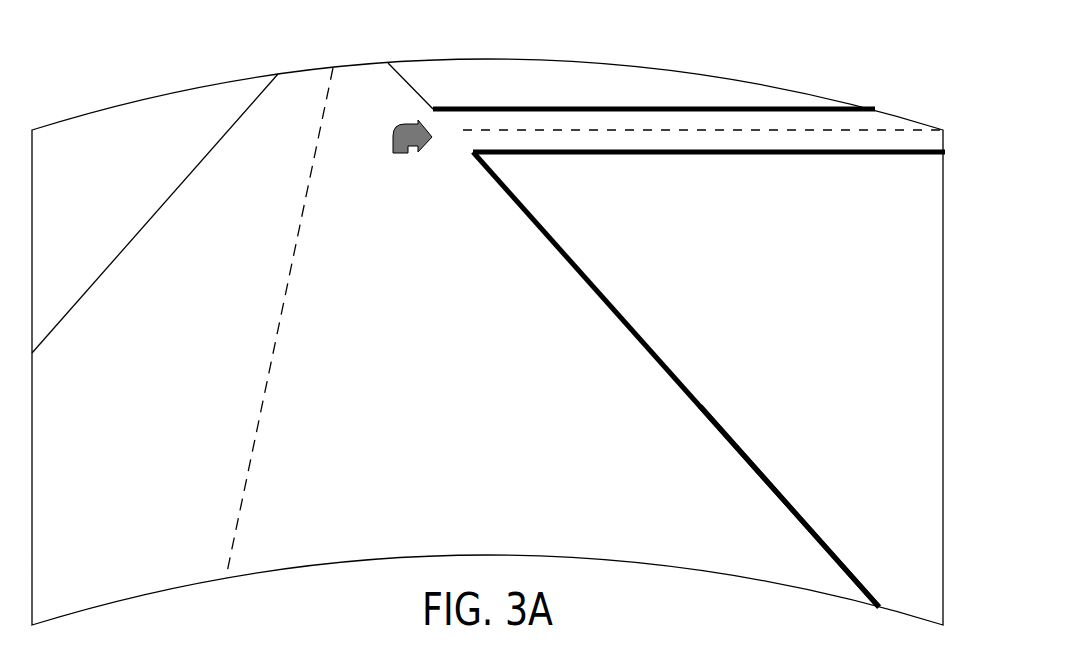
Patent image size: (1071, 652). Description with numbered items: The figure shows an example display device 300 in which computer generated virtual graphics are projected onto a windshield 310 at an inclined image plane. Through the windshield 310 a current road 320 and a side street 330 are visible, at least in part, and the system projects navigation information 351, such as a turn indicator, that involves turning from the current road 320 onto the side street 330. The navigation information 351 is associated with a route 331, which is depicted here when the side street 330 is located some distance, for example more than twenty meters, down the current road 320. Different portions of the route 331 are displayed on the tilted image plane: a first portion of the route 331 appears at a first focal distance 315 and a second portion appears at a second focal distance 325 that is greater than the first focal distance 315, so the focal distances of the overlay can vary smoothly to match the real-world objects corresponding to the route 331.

The display device 300 is at (152, 77).
The windshield 310 is at (716, 76).
The first focal distance 315 is at (812, 524).
The current road 320 is at (125, 243).
The second focal distance 325 is at (563, 255).
The side street 330 is at (563, 108).
The route 331 is at (657, 153).
The navigation information 351 is at (397, 155).